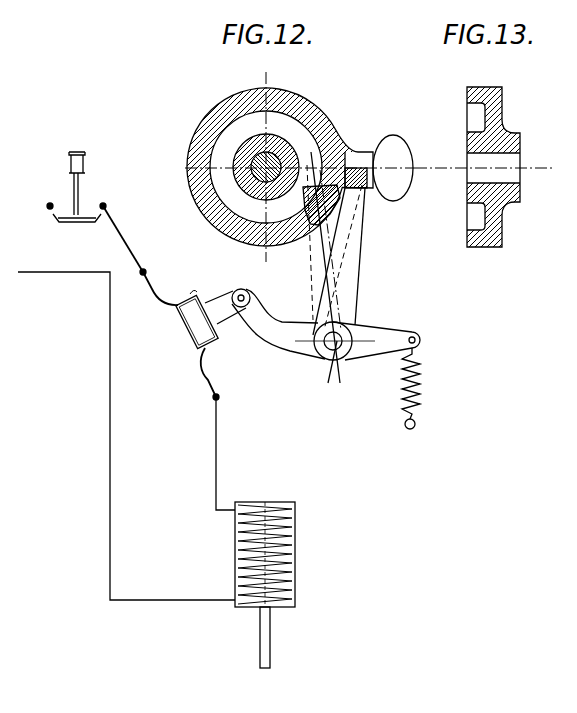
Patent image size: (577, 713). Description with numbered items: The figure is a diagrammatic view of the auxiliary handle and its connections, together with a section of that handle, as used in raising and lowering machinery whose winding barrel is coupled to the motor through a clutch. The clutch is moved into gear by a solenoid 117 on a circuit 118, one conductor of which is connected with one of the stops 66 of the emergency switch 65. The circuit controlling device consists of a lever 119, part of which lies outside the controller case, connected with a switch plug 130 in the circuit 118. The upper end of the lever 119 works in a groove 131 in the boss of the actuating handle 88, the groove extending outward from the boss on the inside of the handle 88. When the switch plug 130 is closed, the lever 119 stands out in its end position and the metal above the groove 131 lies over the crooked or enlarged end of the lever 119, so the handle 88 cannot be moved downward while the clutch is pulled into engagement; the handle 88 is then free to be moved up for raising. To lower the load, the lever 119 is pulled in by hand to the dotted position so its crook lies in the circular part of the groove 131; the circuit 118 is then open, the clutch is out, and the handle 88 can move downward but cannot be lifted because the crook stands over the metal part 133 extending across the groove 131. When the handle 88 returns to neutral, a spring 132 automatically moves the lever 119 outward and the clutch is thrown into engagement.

In FIG. 12, the emergency switch 65 is at (68, 217).
In FIG. 12, the stop 66 is at (104, 205).
In FIG. 12, the actuating handle 88 is at (364, 151).
In FIG. 13, the actuating handle 88 is at (519, 135).
In FIG. 12, the solenoid 117 is at (295, 544).
In FIG. 12, the circuit 118 is at (217, 450).
In FIG. 12, the lever 119 is at (357, 254).
In FIG. 12, the switch plug 130 is at (190, 327).
In FIG. 12, the groove 131 is at (290, 122).
In FIG. 13, the groove 131 is at (472, 117).
In FIG. 12, the spring 132 is at (420, 382).
In FIG. 12, the metal part 133 is at (312, 203).